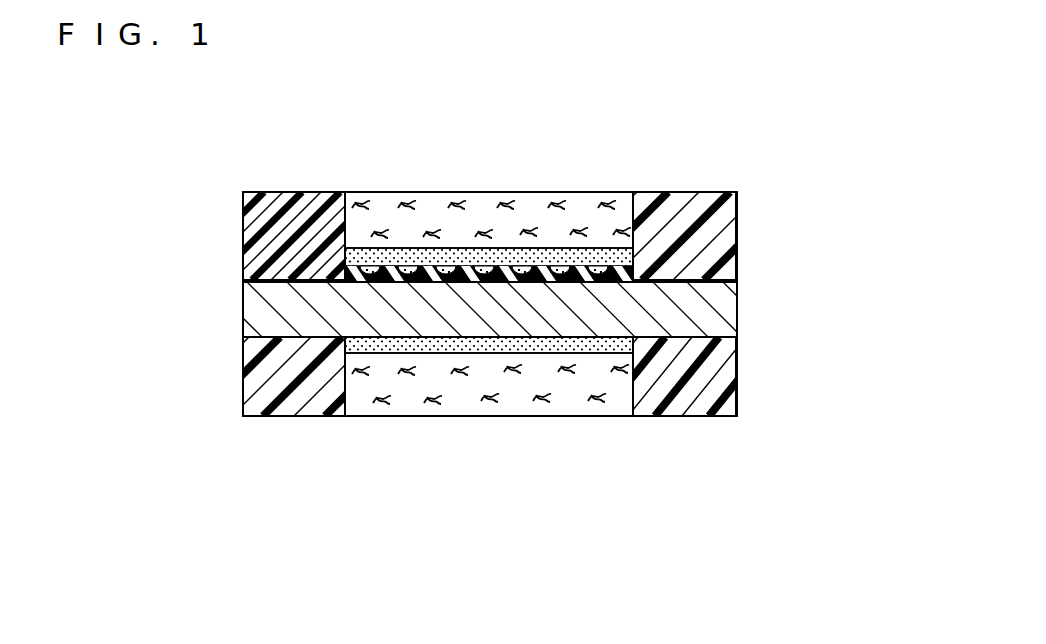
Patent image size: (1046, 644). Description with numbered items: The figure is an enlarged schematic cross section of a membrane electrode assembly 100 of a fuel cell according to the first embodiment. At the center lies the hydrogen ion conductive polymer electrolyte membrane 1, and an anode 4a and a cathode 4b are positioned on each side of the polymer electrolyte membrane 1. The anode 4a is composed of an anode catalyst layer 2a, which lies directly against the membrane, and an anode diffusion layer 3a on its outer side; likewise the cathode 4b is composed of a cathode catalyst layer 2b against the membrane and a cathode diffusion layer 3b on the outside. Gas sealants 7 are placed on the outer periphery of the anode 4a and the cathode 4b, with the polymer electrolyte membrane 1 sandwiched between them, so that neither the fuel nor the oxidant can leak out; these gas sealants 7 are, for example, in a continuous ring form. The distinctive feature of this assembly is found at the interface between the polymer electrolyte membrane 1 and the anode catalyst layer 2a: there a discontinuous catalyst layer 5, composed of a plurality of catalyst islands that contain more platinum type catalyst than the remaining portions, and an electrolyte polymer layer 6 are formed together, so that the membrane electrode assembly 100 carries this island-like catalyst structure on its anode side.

The membrane electrode assembly 100 is at (521, 233).
The hydrogen ion conductive polymer electrolyte membrane 1 is at (705, 311).
The anode catalyst layer 2a is at (612, 259).
The cathode catalyst layer 2b is at (613, 343).
The anode diffusion layer 3a is at (607, 222).
The cathode diffusion layer 3b is at (607, 388).
The anode 4a is at (609, 237).
The cathode 4b is at (604, 376).
The discontinuous catalyst layer 5 is at (413, 272).
The electrolyte polymer layer 6 is at (472, 272).
The gas sealant 7 is at (683, 202).